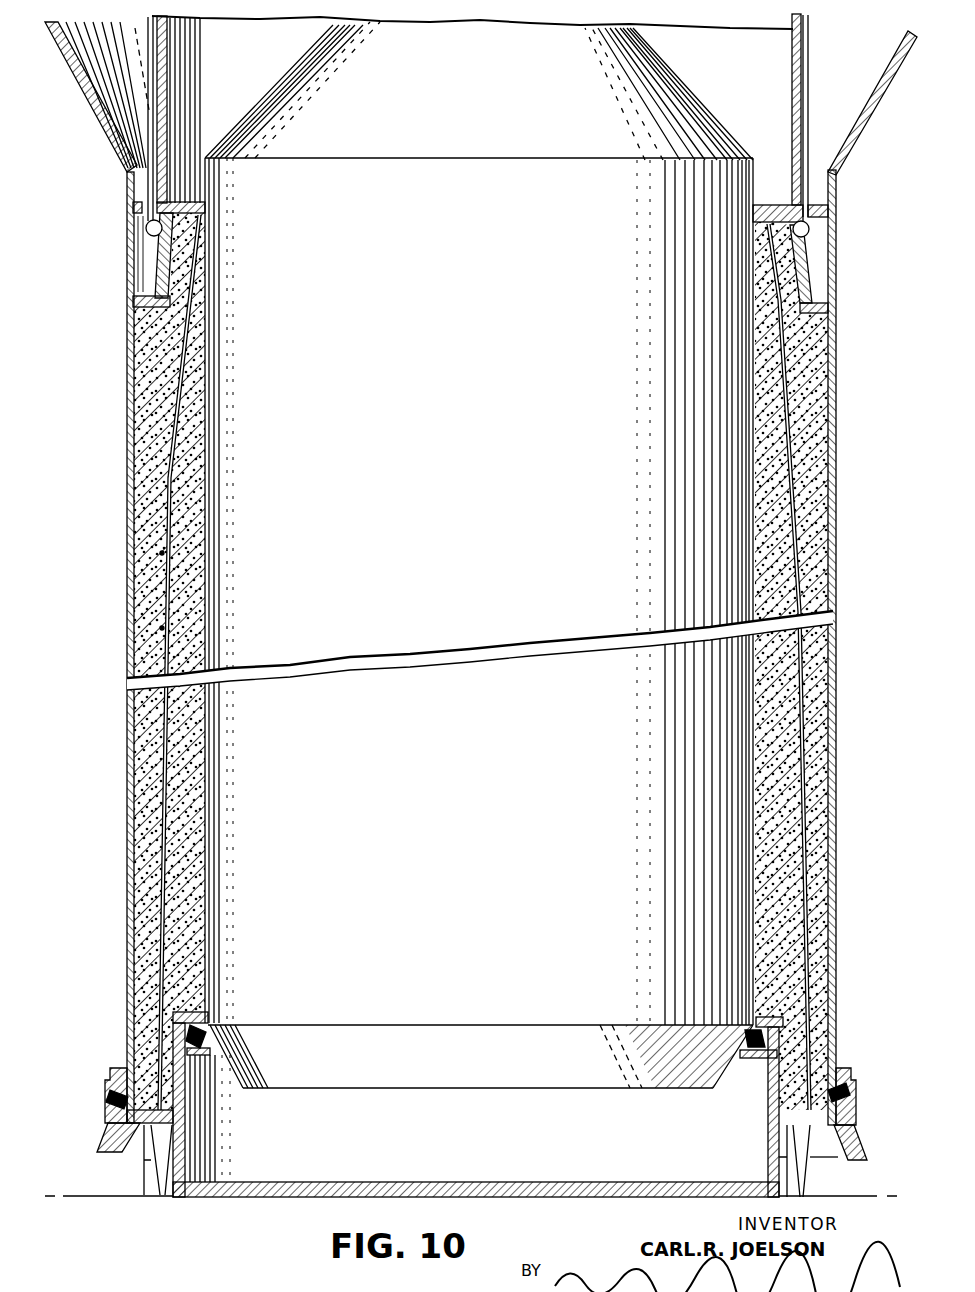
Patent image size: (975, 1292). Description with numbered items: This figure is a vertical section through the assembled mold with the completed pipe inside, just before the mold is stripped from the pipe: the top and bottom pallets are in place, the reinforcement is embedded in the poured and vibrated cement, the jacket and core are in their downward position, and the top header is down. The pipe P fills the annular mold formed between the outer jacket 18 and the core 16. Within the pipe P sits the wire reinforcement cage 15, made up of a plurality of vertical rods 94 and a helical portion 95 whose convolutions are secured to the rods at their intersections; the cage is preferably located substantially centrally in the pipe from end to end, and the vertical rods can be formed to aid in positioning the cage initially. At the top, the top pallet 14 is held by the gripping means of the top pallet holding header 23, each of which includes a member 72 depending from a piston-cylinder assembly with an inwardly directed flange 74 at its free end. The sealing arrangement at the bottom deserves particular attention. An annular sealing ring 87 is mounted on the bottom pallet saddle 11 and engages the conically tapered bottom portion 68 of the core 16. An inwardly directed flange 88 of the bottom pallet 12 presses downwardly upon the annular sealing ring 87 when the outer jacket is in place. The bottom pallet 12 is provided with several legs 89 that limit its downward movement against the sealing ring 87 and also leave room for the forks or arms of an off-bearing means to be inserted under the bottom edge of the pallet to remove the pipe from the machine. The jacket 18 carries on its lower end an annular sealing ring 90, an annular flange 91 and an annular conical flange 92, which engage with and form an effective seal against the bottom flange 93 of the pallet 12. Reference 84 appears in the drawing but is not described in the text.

The member 72 is at (150, 104).
The top pallet holding header 23 is at (793, 37).
The flared top of outer shell 84 is at (830, 198).
The inwardly directed flange 74 is at (147, 233).
The top pallet 14 is at (808, 272).
The core 16 is at (478, 276).
The pipe P is at (150, 352).
The wire reinforcement cage 15 is at (167, 478).
The helical portion 95 is at (160, 628).
The vertical rods 94 is at (172, 598).
The jacket 18 is at (127, 842).
The inwardly directed flange 88 is at (195, 1012).
The annular sealing ring 87 is at (205, 1036).
The conically tapered bottom portion 68 is at (296, 1062).
The bottom pallet saddle 11 is at (489, 1157).
The annular sealing ring 90 is at (110, 1094).
The annular flange 91 is at (108, 1102).
The annular conical flange 92 is at (113, 1133).
The bottom flange 93 is at (150, 1143).
The legs 89 is at (160, 1170).
The bottom pallet 12 is at (828, 1146).